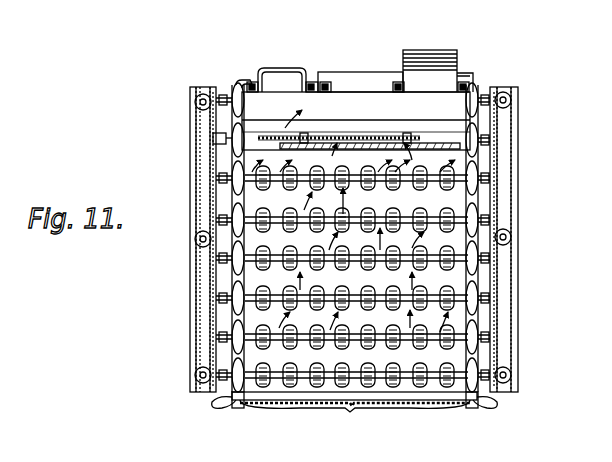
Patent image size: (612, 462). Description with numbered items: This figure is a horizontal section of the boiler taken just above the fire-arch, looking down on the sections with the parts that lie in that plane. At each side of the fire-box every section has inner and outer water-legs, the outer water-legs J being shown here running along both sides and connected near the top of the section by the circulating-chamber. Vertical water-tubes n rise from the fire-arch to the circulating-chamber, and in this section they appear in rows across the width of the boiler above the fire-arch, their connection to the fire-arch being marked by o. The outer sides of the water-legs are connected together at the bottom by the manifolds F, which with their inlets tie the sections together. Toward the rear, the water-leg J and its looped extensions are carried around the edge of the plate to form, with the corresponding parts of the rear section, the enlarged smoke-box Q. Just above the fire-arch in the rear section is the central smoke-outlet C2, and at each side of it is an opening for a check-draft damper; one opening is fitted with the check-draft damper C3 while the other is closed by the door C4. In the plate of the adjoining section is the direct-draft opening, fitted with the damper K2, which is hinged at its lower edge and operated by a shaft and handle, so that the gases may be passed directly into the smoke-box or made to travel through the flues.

The manifold F is at (191, 138).
The door C4 is at (282, 64).
The central smoke-outlet C2 is at (313, 103).
The check-draft damper C3 is at (420, 102).
The outer water-leg J is at (247, 103).
The damper K2 is at (354, 136).
The smoke-box Q is at (356, 121).
The vertical water-tube n is at (478, 212).
The roller shaft o is at (462, 233).